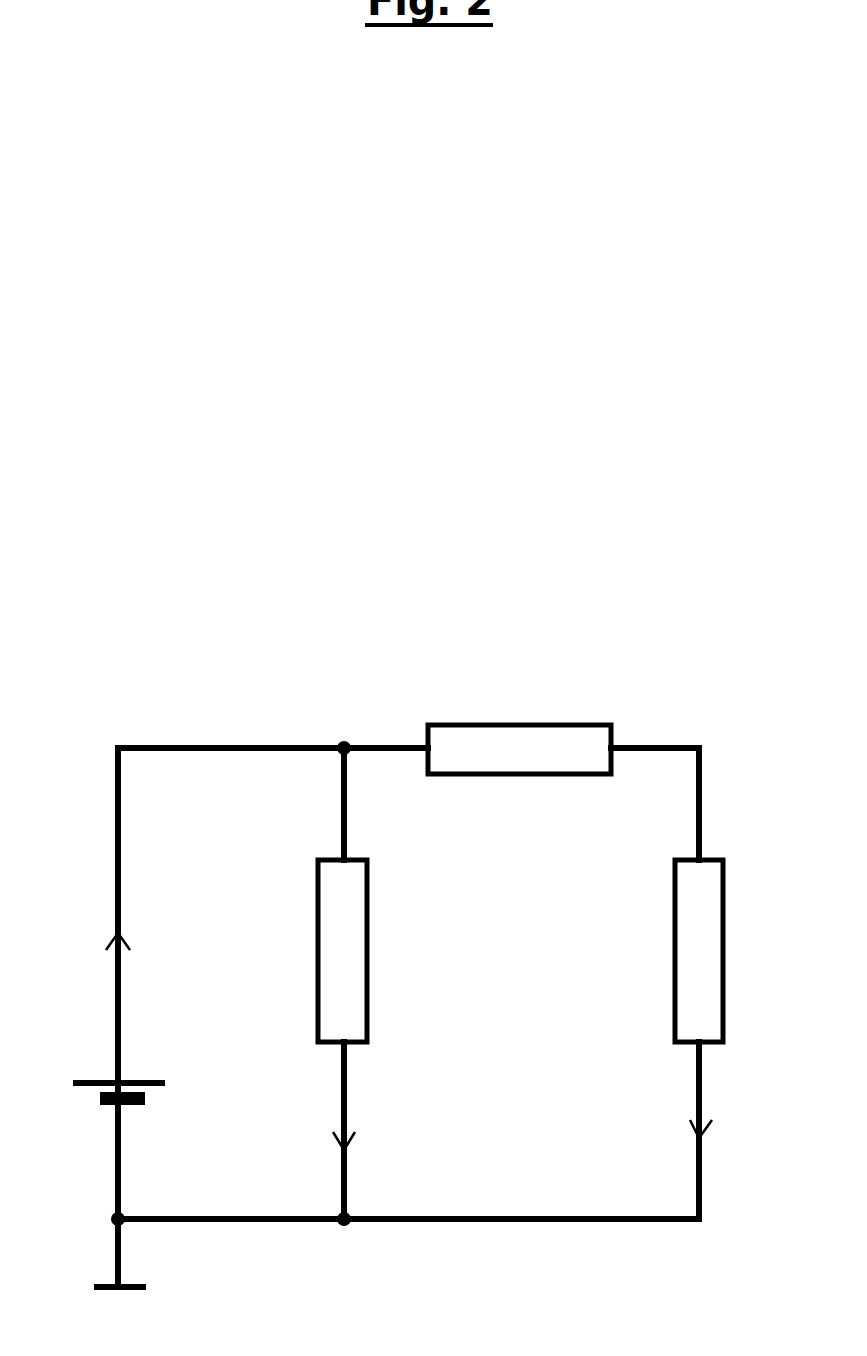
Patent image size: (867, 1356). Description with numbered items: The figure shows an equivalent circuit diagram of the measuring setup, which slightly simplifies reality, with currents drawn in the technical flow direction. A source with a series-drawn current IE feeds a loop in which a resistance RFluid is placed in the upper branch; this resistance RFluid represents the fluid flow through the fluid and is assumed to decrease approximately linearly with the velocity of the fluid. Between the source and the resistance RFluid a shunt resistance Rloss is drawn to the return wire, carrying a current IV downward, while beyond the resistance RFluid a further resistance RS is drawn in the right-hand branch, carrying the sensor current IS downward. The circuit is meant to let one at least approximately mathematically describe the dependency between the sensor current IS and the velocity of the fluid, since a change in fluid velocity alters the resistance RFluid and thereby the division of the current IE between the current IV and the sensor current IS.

The fluid resistance RFluid is at (519, 727).
The loss resistance Rloss is at (382, 951).
The sensor resistance RS is at (725, 951).
The excitation current IE is at (98, 935).
The loss current IV is at (328, 1142).
The sensor current IS is at (686, 1129).